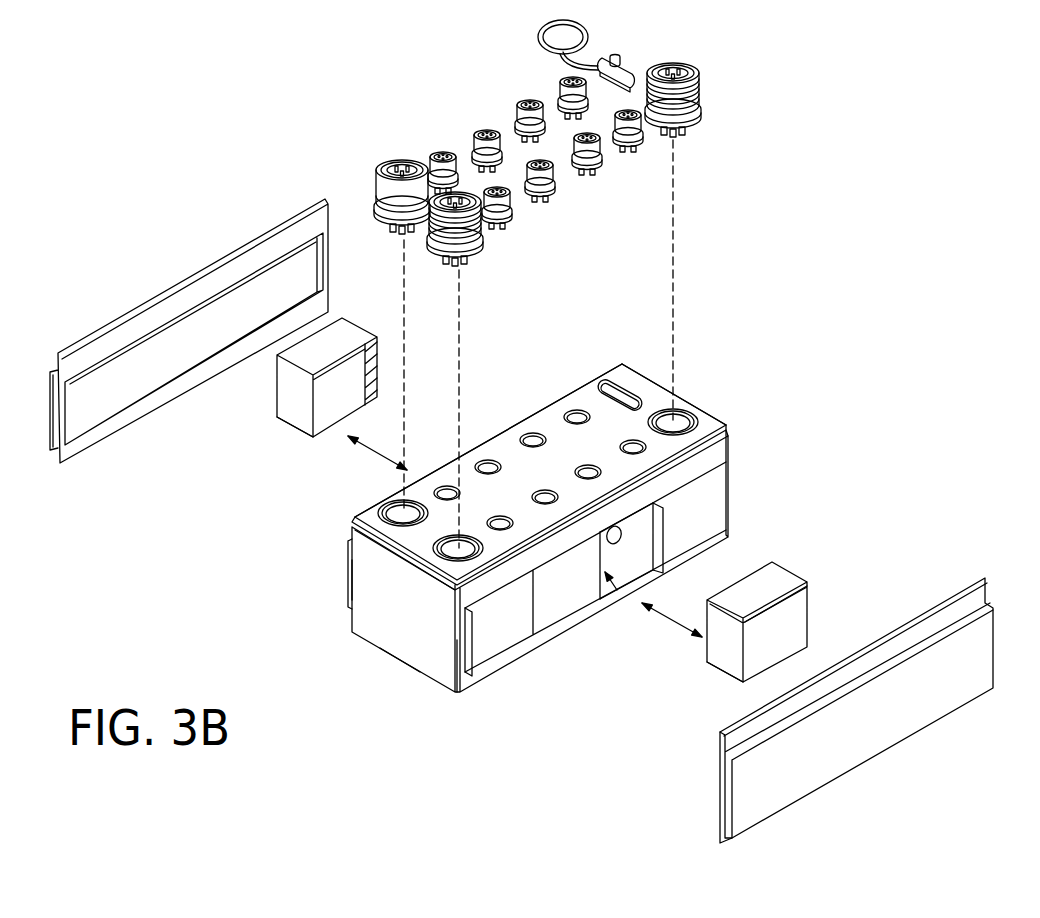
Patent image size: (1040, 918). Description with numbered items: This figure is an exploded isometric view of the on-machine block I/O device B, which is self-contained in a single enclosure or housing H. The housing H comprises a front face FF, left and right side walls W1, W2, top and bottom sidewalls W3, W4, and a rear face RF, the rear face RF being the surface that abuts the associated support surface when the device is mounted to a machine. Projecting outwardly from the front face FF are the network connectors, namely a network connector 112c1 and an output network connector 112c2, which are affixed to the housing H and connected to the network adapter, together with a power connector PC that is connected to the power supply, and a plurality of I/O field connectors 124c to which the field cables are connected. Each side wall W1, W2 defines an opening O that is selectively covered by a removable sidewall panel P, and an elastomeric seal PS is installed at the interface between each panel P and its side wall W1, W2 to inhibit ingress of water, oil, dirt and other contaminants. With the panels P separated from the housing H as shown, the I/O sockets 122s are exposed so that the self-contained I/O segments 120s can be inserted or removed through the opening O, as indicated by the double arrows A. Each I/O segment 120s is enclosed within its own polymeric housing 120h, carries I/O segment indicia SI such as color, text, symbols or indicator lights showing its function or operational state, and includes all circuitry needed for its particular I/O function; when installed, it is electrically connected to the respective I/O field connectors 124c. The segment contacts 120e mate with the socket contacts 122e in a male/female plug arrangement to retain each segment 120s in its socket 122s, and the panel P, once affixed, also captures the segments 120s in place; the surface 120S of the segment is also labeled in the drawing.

The I/O field connector 124c is at (522, 105).
The output network connector 112c2 is at (397, 162).
The network connector 112c1 is at (477, 243).
The power connector PC is at (683, 68).
The sidewall panel P is at (180, 278).
The elastomeric seal PS is at (130, 340).
The I/O segment indicia SI is at (553, 484).
The segment contact 120e is at (374, 367).
The housing of I/O segment 120h is at (303, 422).
The I/O segment 120s is at (283, 398).
The insert side 120S is at (810, 611).
The double arrow A is at (376, 440).
The block I/O device B is at (505, 521).
The front face FF is at (632, 373).
The left side wall W1 is at (722, 445).
The right side wall W2 is at (350, 622).
The top sidewall W3 is at (676, 404).
The bottom sidewall W4 is at (425, 660).
The housing H is at (545, 405).
The rear face RF is at (463, 686).
The I/O socket 122s is at (640, 525).
The socket contact 122e is at (633, 520).
The opening O is at (619, 547).